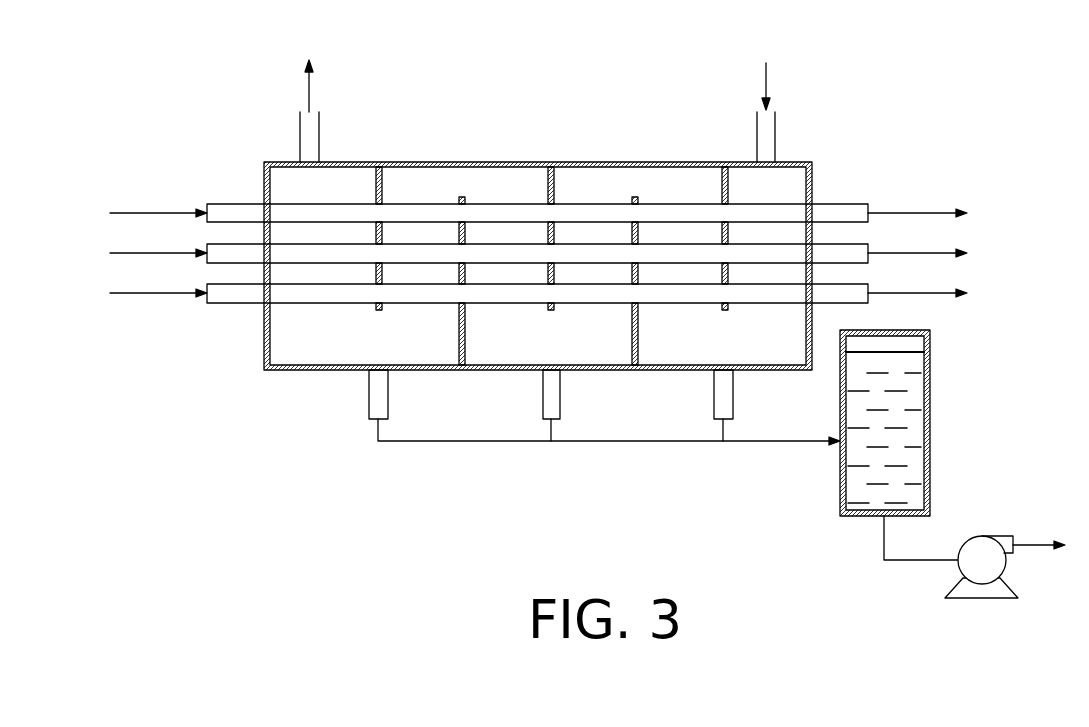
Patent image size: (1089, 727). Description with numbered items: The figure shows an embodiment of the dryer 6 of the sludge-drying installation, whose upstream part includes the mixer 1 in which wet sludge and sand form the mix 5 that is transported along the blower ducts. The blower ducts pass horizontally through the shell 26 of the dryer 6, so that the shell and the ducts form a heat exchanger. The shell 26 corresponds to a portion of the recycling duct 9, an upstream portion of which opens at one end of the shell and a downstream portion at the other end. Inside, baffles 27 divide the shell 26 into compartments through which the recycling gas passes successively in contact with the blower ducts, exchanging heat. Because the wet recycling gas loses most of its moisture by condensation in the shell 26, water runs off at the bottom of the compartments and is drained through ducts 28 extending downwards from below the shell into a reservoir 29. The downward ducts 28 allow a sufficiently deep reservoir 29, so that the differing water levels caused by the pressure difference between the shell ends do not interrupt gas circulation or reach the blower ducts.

The mixer 1 is at (312, 427).
The mix 5 is at (226, 292).
The dryer 6 is at (528, 133).
The recycling duct 9 is at (777, 137).
The shell 26 is at (665, 160).
The baffles 27 is at (380, 308).
The ducts 28 is at (370, 400).
The reservoir 29 is at (910, 425).